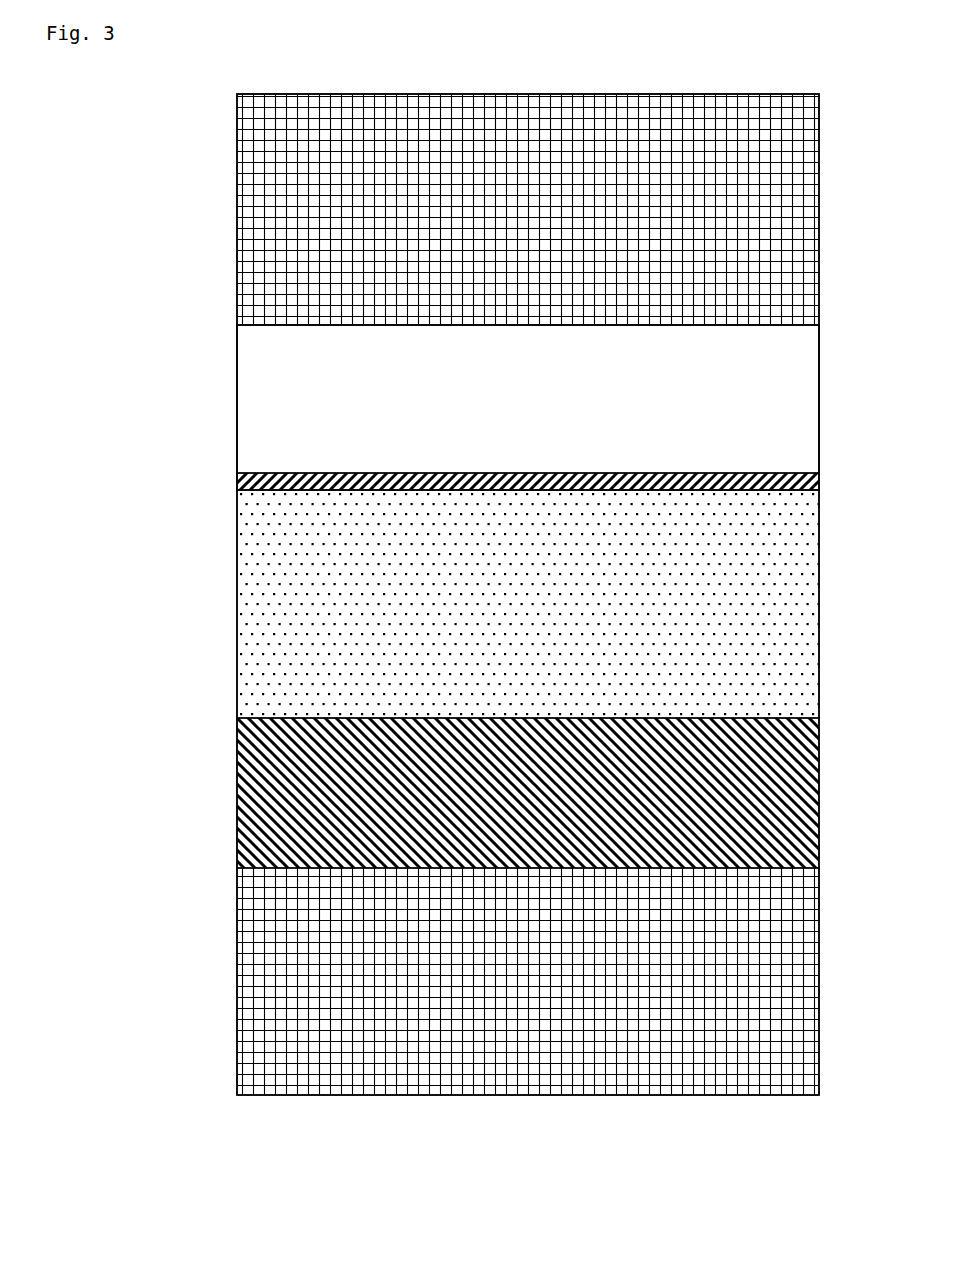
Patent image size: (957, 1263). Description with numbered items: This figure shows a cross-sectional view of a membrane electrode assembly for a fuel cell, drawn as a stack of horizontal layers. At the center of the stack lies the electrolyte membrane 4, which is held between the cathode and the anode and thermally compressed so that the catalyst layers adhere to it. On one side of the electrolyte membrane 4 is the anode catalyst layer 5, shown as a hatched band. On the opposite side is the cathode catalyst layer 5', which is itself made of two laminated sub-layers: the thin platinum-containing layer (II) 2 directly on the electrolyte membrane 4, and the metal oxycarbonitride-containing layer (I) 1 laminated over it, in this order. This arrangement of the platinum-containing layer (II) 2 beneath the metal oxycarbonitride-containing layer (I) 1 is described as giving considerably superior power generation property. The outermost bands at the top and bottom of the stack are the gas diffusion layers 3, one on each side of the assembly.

The metal oxycarbonitride-containing layer (I) 1 is at (262, 393).
The platinum-containing layer (II) 2 is at (238, 478).
The gas diffusion layer (GDL) 3 is at (268, 216).
The electrolyte membrane 4 is at (270, 617).
The anode catalyst layer 5 is at (476, 793).
The cathode catalyst layer 5' is at (559, 407).